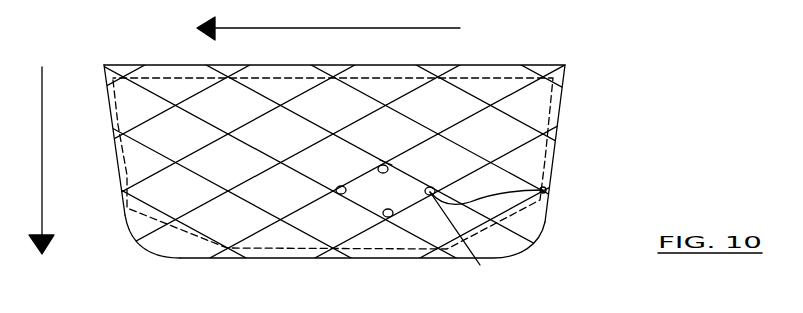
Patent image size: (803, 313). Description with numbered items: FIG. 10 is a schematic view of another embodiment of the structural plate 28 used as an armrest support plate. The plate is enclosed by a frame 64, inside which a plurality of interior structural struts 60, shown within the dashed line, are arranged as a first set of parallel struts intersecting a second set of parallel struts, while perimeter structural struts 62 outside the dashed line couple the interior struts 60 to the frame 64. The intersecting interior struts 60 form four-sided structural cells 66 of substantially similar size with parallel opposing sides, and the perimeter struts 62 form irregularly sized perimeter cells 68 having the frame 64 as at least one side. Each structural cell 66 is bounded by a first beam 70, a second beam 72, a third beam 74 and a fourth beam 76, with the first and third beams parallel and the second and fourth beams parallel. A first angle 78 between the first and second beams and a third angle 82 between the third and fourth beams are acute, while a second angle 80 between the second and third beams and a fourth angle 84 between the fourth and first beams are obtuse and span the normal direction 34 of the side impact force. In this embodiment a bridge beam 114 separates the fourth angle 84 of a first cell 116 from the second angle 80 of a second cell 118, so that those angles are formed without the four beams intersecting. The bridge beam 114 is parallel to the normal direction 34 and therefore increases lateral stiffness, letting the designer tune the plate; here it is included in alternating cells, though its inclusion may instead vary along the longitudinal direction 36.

The structural plate 28 is at (620, 90).
The normal direction 34 is at (40, 153).
The longitudinal direction 36 is at (375, 28).
The interior structural struts 60 is at (520, 97).
The perimeter structural struts 62 is at (559, 110).
The frame 64 is at (106, 103).
The structural cells 66 is at (393, 190).
The perimeter cells 68 is at (140, 218).
The first beam 70 is at (380, 206).
The second beam 72 is at (380, 170).
The third beam 74 is at (432, 186).
The fourth beam 76 is at (434, 192).
The first angle 78 is at (341, 186).
The second angle 80 is at (392, 163).
The third angle 82 is at (545, 191).
The fourth angle 84 is at (392, 216).
The bridge beam 114 is at (275, 162).
The first cell 116 is at (265, 135).
The second cell 118 is at (278, 198).